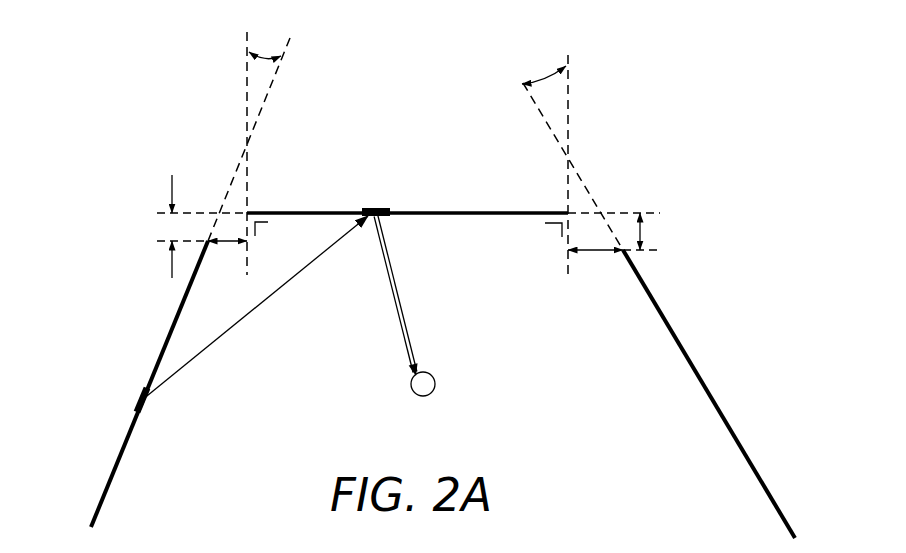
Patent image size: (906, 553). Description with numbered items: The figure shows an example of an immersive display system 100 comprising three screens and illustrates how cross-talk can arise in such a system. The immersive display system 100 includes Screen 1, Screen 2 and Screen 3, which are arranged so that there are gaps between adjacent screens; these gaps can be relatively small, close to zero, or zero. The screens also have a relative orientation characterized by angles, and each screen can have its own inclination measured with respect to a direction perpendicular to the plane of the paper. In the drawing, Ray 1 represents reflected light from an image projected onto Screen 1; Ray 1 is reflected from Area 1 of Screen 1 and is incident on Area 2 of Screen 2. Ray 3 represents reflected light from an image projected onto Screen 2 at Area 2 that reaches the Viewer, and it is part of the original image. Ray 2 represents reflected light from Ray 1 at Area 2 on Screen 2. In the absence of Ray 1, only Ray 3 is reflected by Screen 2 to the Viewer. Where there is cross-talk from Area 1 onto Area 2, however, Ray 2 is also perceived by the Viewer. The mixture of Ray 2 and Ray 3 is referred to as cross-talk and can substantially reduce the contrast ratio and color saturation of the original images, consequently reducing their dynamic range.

The immersive display system 100 is at (655, 124).
The element Screen 1 is at (127, 443).
The element Screen 2 is at (459, 208).
The element Screen 3 is at (724, 417).
The element Area 1 is at (136, 398).
The element Area 2 is at (372, 206).
The element Ray 1 is at (259, 312).
The element Ray 2 is at (391, 298).
The element Ray 3 is at (399, 273).
The viewer Viewer is at (424, 397).